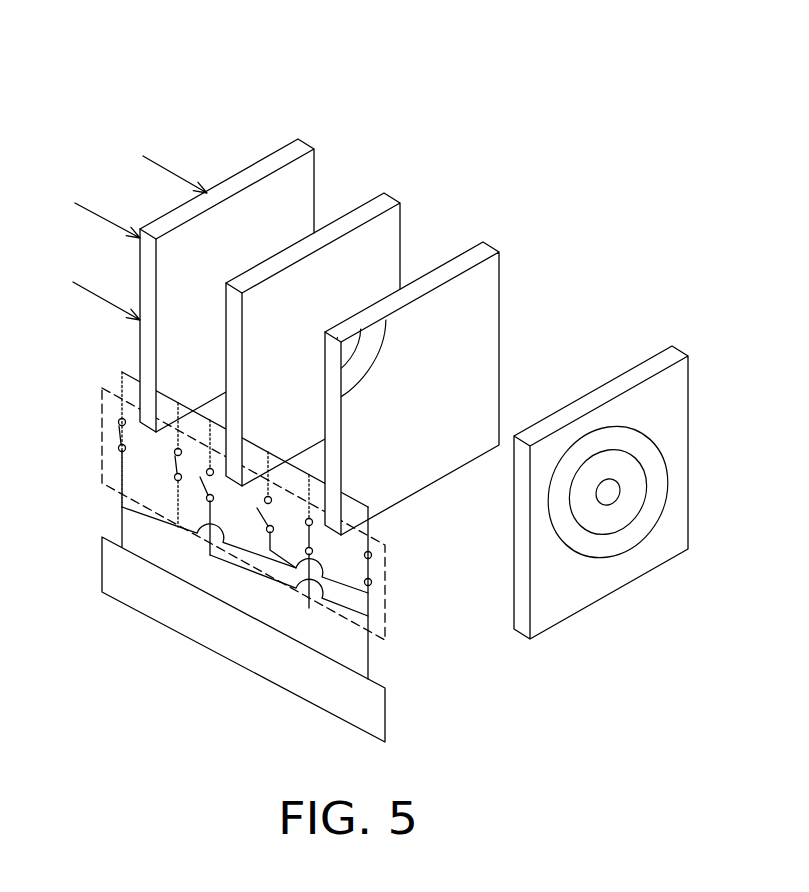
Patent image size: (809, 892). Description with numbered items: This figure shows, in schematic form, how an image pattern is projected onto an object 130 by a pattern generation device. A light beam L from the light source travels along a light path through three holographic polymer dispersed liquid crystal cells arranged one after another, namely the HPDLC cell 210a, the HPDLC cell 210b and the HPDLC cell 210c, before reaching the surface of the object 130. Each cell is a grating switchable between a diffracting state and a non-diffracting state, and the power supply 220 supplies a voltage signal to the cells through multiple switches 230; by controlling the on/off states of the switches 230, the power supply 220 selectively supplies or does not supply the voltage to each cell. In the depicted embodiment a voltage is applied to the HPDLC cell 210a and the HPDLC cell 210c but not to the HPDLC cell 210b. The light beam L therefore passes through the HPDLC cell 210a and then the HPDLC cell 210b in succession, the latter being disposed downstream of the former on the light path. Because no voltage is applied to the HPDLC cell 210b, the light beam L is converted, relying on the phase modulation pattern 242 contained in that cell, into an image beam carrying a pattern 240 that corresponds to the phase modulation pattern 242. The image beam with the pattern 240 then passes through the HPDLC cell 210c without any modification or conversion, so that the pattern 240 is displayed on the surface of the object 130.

The light beam L is at (170, 172).
The HPDLC cell 210a is at (297, 142).
The HPDLC cell 210b is at (390, 200).
The HPDLC cell 210c is at (483, 242).
The phase modulation pattern 242 is at (386, 262).
The object 130 is at (660, 358).
The pattern 240 is at (660, 443).
The switches 230 is at (387, 613).
The power supply 220 is at (387, 715).